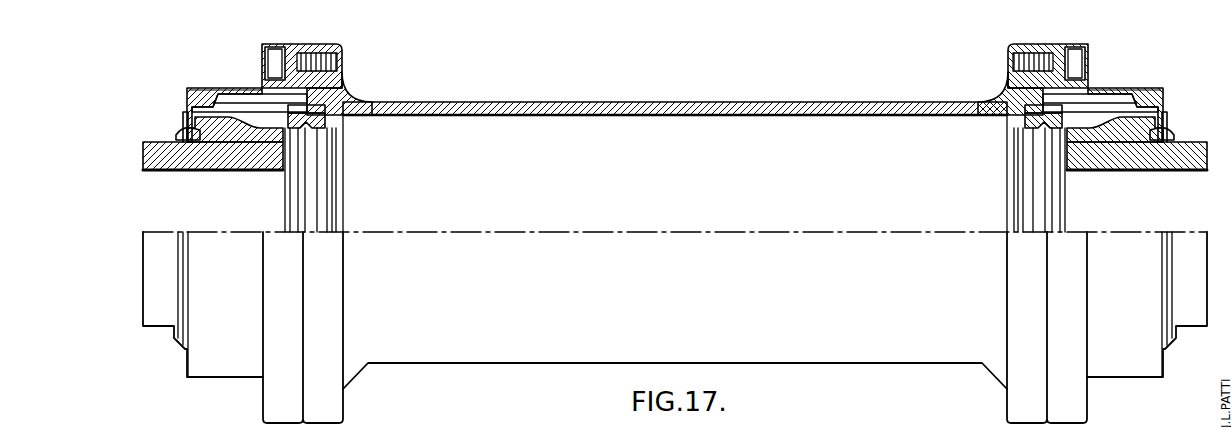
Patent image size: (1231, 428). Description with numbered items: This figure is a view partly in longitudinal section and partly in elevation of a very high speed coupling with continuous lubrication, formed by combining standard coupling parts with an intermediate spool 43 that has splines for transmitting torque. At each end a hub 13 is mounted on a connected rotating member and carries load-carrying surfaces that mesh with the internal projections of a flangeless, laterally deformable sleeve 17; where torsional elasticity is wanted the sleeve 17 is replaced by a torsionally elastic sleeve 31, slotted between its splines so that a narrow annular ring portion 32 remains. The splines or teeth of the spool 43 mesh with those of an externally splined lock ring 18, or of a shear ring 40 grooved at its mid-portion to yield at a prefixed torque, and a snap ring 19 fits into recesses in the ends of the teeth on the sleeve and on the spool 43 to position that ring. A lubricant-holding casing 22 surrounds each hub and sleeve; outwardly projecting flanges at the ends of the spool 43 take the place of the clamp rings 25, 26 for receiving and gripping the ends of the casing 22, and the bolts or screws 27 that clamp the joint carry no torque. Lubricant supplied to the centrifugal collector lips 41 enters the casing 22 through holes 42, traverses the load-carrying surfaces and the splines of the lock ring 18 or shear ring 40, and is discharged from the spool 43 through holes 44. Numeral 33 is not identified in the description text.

The hub 13 is at (236, 164).
The sleeve 17 is at (1122, 95).
The lock ring 18 is at (1039, 128).
The snap ring 19 is at (1022, 123).
The casing 22 is at (189, 90).
The clamp ring 25 is at (999, 427).
The clamp ring 26 is at (266, 48).
The bolts or screws 27 is at (279, 60).
The torsionally elastic sleeve 31 is at (243, 97).
The annular ring portion 32 is at (912, 425).
The spoke flange 33 is at (439, 425).
The shear ring 40 is at (306, 130).
The centrifugal collector lip 41 is at (183, 121).
The holes 42 is at (178, 130).
The spool 43 is at (655, 103).
The holes 44 is at (352, 96).